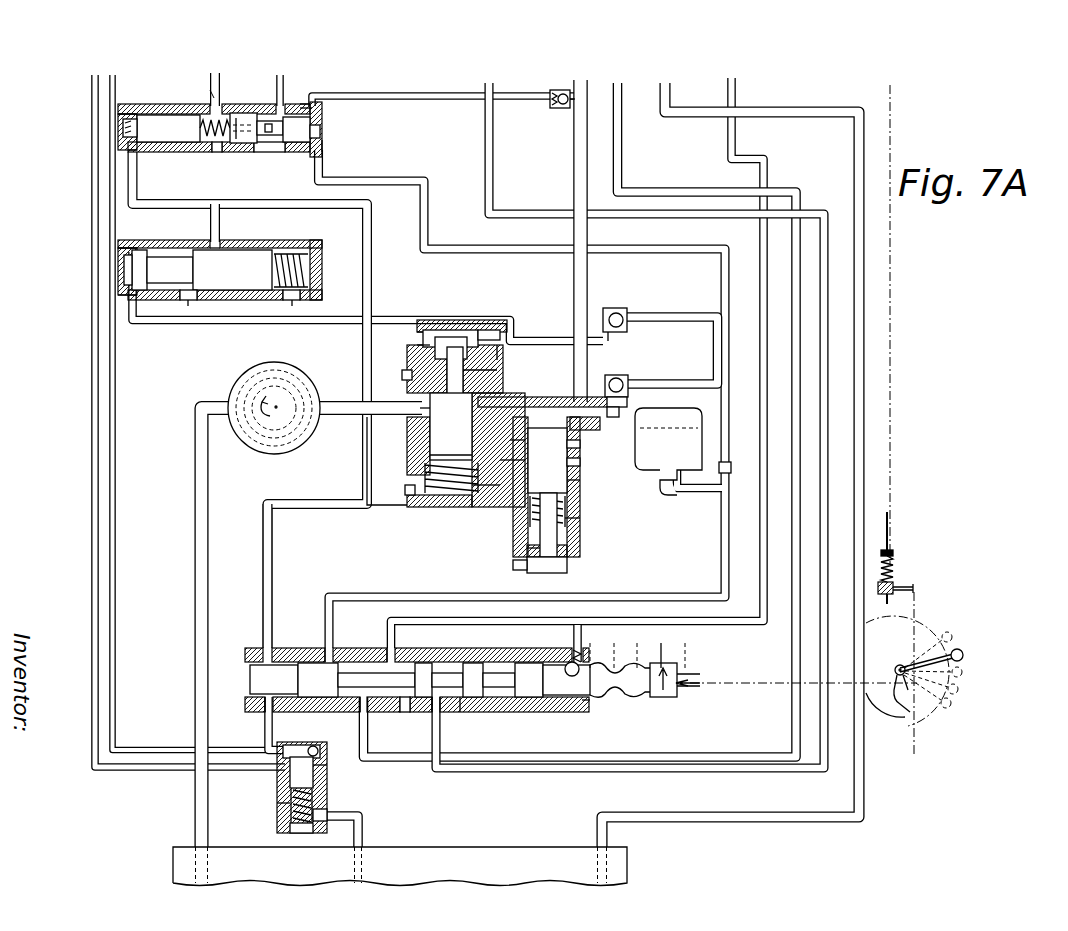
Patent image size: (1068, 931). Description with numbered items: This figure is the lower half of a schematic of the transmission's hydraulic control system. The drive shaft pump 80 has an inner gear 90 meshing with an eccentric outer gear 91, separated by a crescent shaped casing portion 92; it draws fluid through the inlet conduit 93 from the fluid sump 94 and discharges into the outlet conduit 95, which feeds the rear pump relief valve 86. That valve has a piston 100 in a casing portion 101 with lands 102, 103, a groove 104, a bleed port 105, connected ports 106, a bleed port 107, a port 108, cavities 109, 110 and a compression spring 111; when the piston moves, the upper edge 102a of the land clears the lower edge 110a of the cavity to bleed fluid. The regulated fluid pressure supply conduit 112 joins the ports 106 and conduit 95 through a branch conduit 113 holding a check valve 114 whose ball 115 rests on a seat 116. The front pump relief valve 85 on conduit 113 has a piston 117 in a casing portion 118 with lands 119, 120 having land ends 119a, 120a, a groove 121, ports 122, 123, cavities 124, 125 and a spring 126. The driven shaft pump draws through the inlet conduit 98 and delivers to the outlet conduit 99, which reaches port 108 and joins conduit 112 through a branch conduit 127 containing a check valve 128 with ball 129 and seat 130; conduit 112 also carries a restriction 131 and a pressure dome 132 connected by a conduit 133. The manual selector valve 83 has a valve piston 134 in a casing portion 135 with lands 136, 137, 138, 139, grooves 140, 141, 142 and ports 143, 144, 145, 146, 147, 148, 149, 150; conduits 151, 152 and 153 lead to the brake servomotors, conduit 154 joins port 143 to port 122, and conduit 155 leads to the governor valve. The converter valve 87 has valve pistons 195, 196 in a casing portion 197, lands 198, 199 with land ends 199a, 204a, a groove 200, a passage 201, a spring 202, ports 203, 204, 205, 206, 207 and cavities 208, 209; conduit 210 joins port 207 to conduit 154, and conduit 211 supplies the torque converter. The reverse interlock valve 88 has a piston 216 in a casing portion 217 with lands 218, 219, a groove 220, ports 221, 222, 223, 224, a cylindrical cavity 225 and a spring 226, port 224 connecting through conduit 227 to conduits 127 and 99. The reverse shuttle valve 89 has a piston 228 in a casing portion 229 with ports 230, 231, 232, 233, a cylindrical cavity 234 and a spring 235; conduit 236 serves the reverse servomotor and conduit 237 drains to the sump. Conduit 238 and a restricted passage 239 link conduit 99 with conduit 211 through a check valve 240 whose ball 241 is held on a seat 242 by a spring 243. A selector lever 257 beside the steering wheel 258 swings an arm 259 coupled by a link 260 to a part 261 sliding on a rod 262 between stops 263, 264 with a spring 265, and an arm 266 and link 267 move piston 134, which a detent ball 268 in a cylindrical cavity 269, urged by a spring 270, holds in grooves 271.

The drive shaft pump 80 is at (266, 403).
The manual selector valve 83 is at (535, 682).
The front pump relief valve 85 is at (561, 506).
The rear pump relief valve 86 is at (454, 401).
The converter valve 87 is at (197, 141).
The reverse interlock valve 88 is at (184, 278).
The reverse shuttle valve 89 is at (339, 810).
The inner gear 90 is at (302, 380).
The outer gear 91 is at (305, 400).
The crescent shaped casing portion 92 is at (240, 398).
The inlet conduit 93 is at (196, 498).
The fluid sump 94 is at (530, 854).
The outlet conduit 95 is at (346, 416).
The inlet conduit 98 is at (672, 88).
The outlet conduit 99 is at (575, 176).
The piston 100 is at (420, 459).
The casing portion 101 is at (432, 328).
The land 102 is at (470, 327).
The upper edge of land 102a is at (419, 333).
The land 103 is at (440, 435).
The groove 104 is at (472, 374).
The port 105 is at (415, 495).
The connected ports 106 is at (425, 428).
The port 107 is at (420, 388).
The port 108 is at (500, 330).
The cavity 109 is at (430, 470).
The cavity 110 is at (480, 355).
The lower edge of cavity 110a is at (420, 357).
The compression spring 111 is at (478, 487).
The regulated fluid pressure supply conduit 112 is at (428, 204).
The branch conduit 113 is at (585, 402).
The check valve 114 is at (633, 375).
The ball 115 is at (610, 382).
The seat 116 is at (627, 406).
The piston 117 is at (514, 569).
The casing portion 118 is at (522, 465).
The land 119 is at (566, 566).
The land end 119a is at (536, 549).
The land 120 is at (528, 448).
The land end 120a is at (566, 486).
The groove 121 is at (566, 504).
The port 122 is at (547, 460).
The port 123 is at (578, 445).
The cavity 124 is at (558, 546).
The cavity 125 is at (574, 462).
The spring 126 is at (566, 520).
The branch conduit 127 is at (558, 340).
The check valve 128 is at (637, 305).
The ball 129 is at (626, 318).
The seat 130 is at (627, 337).
The restriction 131 is at (712, 480).
The pressure dome 132 is at (688, 416).
The conduit 133 is at (698, 493).
The valve piston 134 is at (684, 688).
The casing portion 135 is at (592, 706).
The land 136 is at (310, 662).
The land 137 is at (422, 662).
The land 138 is at (472, 662).
The land 139 is at (535, 666).
The groove 140 is at (358, 672).
The groove 141 is at (449, 672).
The groove 142 is at (500, 688).
The port 143 is at (262, 663).
The port 144 is at (319, 645).
The port 145 is at (386, 646).
The port 146 is at (465, 712).
The port 147 is at (430, 712).
The port 148 is at (405, 712).
The port 149 is at (360, 712).
The port 150 is at (264, 705).
The conduit 151 is at (486, 110).
The conduit 152 is at (622, 94).
The conduit 153 is at (117, 83).
The conduit 154 is at (263, 561).
The conduit 155 is at (737, 90).
The valve piston 195 is at (320, 134).
The valve piston 196 is at (120, 131).
The casing portion 197 is at (163, 106).
The land 198 is at (303, 108).
The land 199 is at (247, 146).
The land end 199a is at (217, 152).
The groove 200 is at (276, 152).
The passage 201 is at (238, 142).
The spring 202 is at (204, 128).
The port 203 is at (221, 95).
The port 204 is at (281, 104).
The land end 204a is at (312, 124).
The port 205 is at (322, 148).
The port 206 is at (262, 153).
The port 207 is at (132, 152).
The cavity 208 is at (312, 109).
The cavity 209 is at (118, 115).
The conduit 210 is at (127, 183).
The conduit 211 is at (209, 86).
The piston 216 is at (124, 264).
The casing portion 217 is at (120, 244).
The land 218 is at (255, 250).
The land 219 is at (141, 249).
The groove 220 is at (160, 256).
The port 221 is at (222, 243).
The port 222 is at (304, 300).
The port 223 is at (196, 303).
The port 224 is at (130, 298).
The cylindrical cavity 225 is at (232, 270).
The spring 226 is at (312, 262).
The conduit 227 is at (320, 324).
The piston 228 is at (329, 753).
The casing portion 229 is at (310, 834).
The port 230 is at (278, 803).
The port 231 is at (279, 788).
The port 232 is at (280, 754).
The port 233 is at (318, 820).
The cylindrical cavity 234 is at (325, 770).
The spring 235 is at (300, 822).
The conduit 236 is at (91, 80).
The conduit 237 is at (364, 820).
The conduit 238 is at (441, 99).
The restricted passage 239 is at (578, 101).
The check valve 240 is at (551, 120).
The ball 241 is at (579, 122).
The seat 242 is at (566, 106).
The spring 243 is at (552, 104).
The selector lever 257 is at (964, 652).
The steering wheel 258 is at (912, 728).
The arm 259 is at (915, 710).
The link 260 is at (917, 600).
The part 261 is at (904, 586).
The rod 262 is at (893, 99).
The stop 263 is at (892, 551).
The stop 264 is at (887, 604).
The spring 265 is at (893, 566).
The arm 266 is at (890, 715).
The link 267 is at (778, 682).
The ball 268 is at (582, 700).
The cylindrical cavity 269 is at (563, 648).
The spring 270 is at (578, 624).
The grooves 271 is at (640, 700).